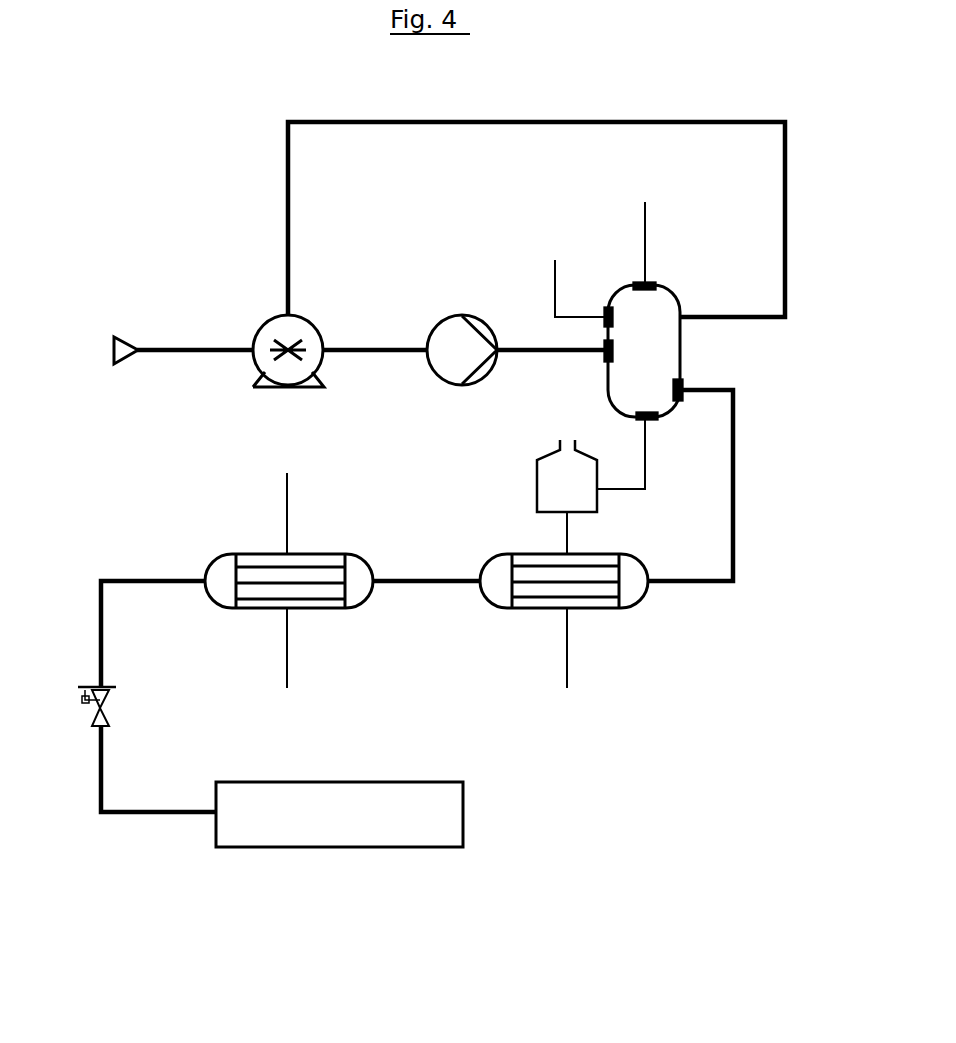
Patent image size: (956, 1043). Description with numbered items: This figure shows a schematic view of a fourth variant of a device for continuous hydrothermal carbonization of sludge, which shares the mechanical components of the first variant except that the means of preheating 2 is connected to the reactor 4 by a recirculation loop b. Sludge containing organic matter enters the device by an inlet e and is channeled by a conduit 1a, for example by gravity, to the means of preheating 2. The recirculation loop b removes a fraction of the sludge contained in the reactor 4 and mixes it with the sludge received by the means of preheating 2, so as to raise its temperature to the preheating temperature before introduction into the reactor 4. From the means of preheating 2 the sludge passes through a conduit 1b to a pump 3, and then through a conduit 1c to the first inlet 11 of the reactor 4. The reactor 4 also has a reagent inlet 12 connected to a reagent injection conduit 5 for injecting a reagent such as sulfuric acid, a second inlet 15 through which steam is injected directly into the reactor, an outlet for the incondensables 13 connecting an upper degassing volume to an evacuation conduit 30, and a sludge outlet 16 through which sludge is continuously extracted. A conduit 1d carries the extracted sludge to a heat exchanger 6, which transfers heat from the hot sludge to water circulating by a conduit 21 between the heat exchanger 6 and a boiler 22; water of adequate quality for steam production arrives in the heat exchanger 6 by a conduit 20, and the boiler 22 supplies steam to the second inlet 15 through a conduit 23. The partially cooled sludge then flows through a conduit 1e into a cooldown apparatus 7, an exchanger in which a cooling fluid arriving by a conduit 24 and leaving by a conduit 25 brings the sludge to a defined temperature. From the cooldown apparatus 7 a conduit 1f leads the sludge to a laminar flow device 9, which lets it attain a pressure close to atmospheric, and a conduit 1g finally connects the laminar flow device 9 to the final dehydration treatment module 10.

The conduit 1a is at (228, 348).
The conduit 1b is at (377, 355).
The conduit 1c is at (563, 355).
The conduit 1d is at (733, 422).
The conduit 1e is at (412, 578).
The conduit 1f is at (101, 616).
The conduit 1g is at (128, 816).
The means of preheating 2 is at (322, 337).
The pump 3 is at (450, 318).
The reactor 4 is at (680, 308).
The reagent injection conduit 5 is at (555, 277).
The heat exchanger 6 is at (490, 606).
The cooldown apparatus 7 is at (345, 608).
The laminar flow device 9 is at (105, 705).
The final dehydration treatment module 10 is at (345, 847).
The first inlet 11 is at (606, 362).
The reagent inlet 12 is at (612, 295).
The outlet for the incondensables 13 is at (655, 285).
The second inlet 15 is at (637, 418).
The sludge outlet 16 is at (683, 382).
The conduit 20 is at (567, 672).
The conduit 21 is at (567, 540).
The boiler 22 is at (537, 470).
The conduit 23 is at (645, 446).
The conduit 24 is at (287, 682).
The conduit 25 is at (287, 508).
The evacuation conduit 30 is at (645, 226).
The recirculation loop b is at (487, 124).
The inlet e is at (118, 365).